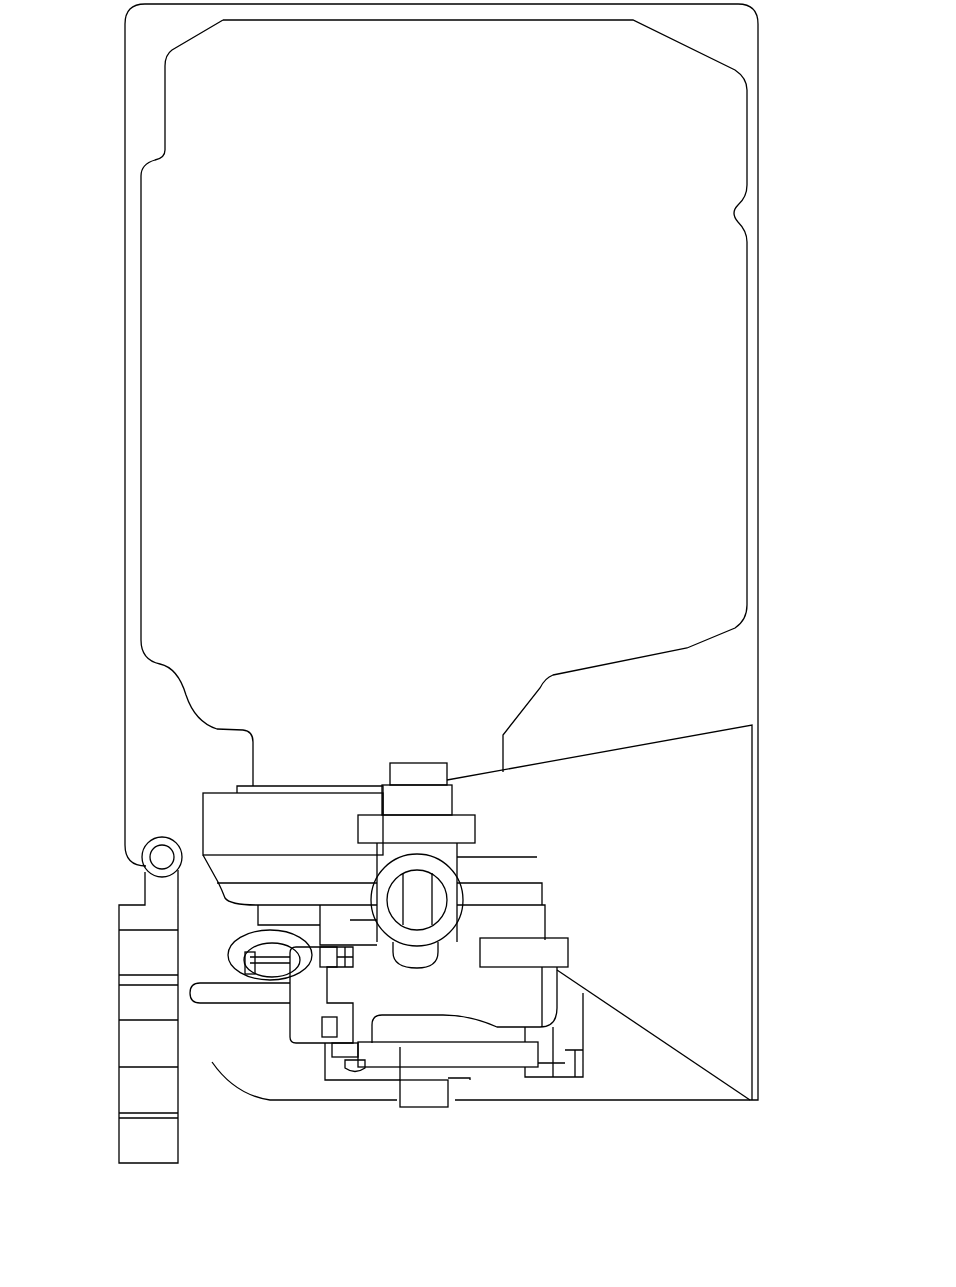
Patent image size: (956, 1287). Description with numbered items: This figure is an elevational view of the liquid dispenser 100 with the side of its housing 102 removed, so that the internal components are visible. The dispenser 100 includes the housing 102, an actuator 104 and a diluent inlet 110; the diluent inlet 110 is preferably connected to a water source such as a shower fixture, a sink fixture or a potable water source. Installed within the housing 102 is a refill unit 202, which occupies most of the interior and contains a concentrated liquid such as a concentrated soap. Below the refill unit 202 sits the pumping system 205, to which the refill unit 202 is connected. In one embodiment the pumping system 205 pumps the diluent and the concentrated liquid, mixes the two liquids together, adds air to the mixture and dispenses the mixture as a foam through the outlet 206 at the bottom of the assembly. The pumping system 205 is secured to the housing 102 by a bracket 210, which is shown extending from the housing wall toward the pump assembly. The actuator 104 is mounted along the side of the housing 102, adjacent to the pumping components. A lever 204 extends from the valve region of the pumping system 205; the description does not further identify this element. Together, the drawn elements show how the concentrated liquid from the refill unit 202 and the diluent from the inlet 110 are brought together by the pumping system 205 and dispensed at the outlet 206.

The dispenser 100 is at (68, 290).
The housing 102 is at (758, 71).
The actuator 104 is at (119, 1050).
The diluent inlet 110 is at (450, 886).
The refill unit 202 is at (705, 302).
The lever 204 is at (242, 1000).
The pumping system 205 is at (300, 1080).
The outlet 206 is at (442, 1092).
The bracket 210 is at (706, 732).